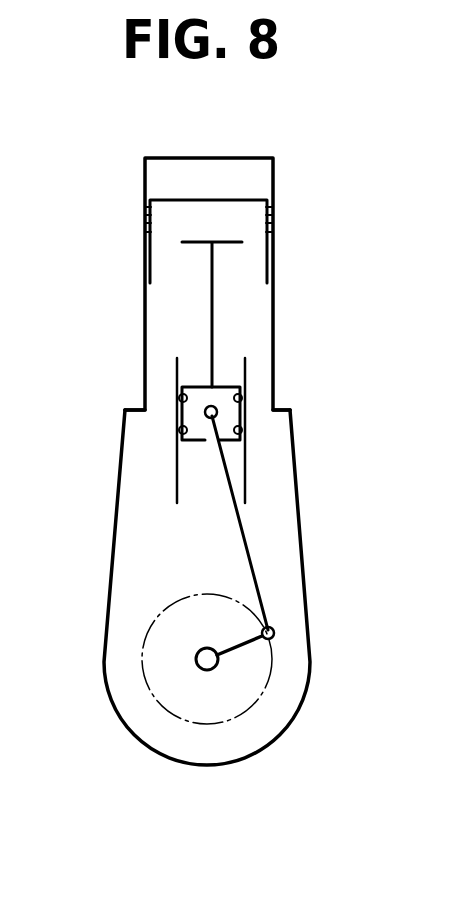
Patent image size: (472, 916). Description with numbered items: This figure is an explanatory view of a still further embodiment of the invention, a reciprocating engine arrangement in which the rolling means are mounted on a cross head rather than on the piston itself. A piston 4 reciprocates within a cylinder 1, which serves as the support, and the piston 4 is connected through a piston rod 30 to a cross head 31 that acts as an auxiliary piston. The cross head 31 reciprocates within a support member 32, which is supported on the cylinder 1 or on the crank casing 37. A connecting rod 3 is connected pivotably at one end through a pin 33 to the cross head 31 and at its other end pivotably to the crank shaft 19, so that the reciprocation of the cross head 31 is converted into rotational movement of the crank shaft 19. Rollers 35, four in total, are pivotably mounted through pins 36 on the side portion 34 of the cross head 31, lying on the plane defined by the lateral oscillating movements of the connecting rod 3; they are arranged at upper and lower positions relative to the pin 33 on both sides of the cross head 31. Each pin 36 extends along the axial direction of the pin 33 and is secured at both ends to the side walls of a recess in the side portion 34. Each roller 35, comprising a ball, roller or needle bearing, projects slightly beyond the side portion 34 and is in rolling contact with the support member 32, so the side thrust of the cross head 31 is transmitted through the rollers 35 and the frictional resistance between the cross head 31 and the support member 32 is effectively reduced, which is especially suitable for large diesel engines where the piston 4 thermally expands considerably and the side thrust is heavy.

The cylinder 1 is at (145, 177).
The piston 4 is at (243, 200).
The piston rod 30 is at (211, 297).
The cross head 31 is at (224, 387).
The pin 33 is at (218, 412).
The rollers 35 is at (180, 397).
The pins 36 is at (179, 402).
The support member 32 is at (175, 452).
The side portion 34 is at (173, 412).
The connecting rod 3 is at (245, 542).
The crank shaft 19 is at (240, 648).
The crank casing 37 is at (106, 606).